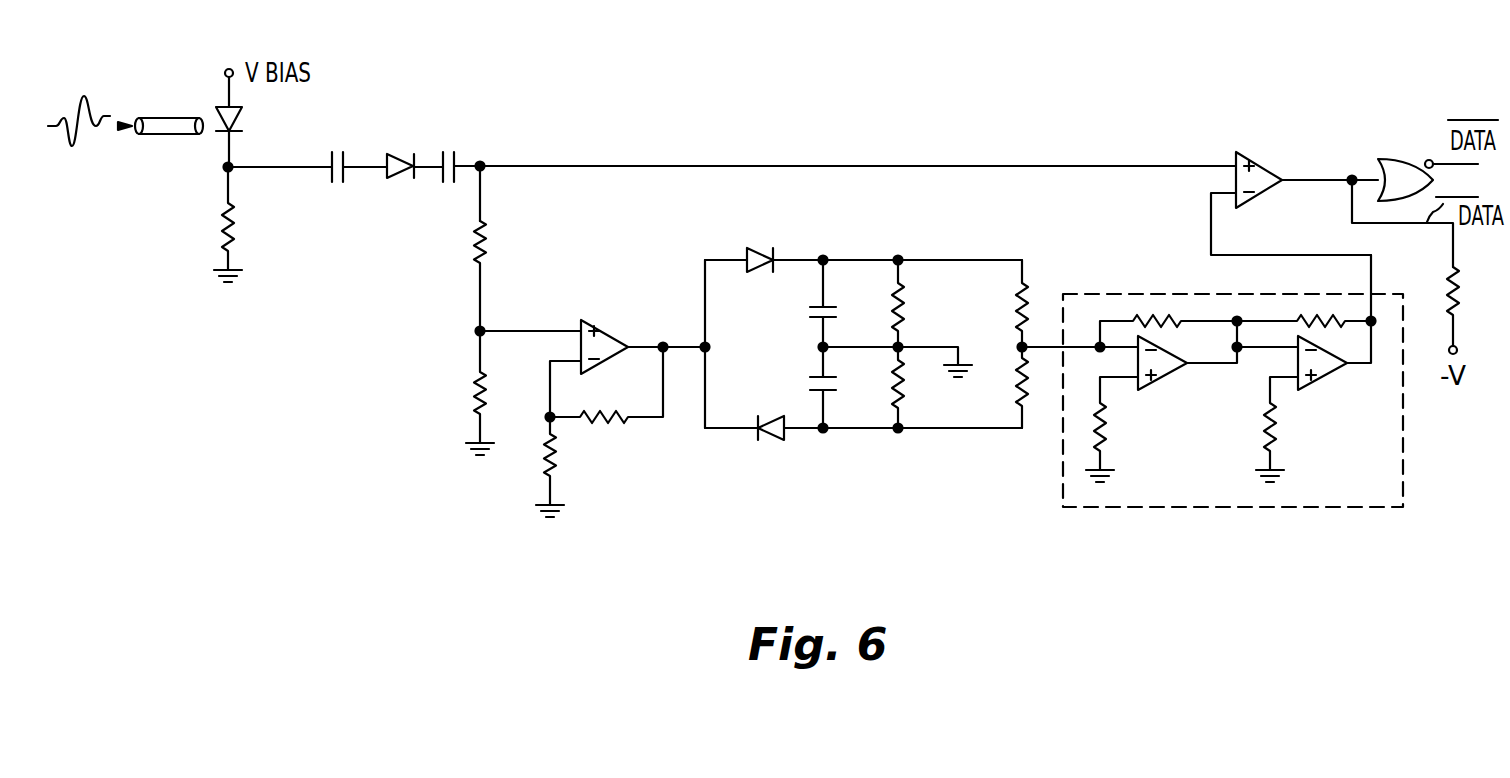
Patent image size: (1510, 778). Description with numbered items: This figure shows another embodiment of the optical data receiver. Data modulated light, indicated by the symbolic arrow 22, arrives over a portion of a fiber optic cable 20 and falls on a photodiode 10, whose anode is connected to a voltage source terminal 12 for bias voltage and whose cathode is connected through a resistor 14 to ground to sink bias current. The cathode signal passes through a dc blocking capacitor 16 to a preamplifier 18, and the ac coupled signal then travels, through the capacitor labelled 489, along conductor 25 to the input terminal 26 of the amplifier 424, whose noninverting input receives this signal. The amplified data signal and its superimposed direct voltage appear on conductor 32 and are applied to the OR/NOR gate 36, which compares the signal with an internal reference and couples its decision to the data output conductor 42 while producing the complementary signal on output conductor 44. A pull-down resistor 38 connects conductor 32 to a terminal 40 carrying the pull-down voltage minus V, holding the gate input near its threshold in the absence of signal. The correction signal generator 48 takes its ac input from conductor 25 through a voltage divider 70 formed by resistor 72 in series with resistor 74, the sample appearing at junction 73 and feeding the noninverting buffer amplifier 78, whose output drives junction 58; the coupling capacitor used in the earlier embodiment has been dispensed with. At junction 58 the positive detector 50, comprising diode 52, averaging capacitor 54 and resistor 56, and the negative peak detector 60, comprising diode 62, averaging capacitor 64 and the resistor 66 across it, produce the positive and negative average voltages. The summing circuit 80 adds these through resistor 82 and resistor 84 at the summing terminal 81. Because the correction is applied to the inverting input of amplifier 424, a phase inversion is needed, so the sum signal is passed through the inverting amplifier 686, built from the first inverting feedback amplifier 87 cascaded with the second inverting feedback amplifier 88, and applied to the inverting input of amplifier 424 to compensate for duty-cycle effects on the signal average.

The data modulated light 22 is at (90, 94).
The fiber optic cable 20 is at (172, 137).
The voltage source terminal 12 is at (225, 73).
The photodiode 10 is at (242, 112).
The resistor 14 is at (222, 222).
The dc blocking capacitor 16 is at (338, 150).
The preamplifier 18 is at (400, 152).
The capacitor 489 is at (447, 152).
The conductor 25 is at (782, 166).
The voltage divider 70 is at (481, 310).
The resistor 72 is at (474, 242).
The junction 73 is at (476, 331).
The resistor 74 is at (478, 392).
The noninverting buffer amplifier 78 is at (644, 398).
The junction 58 is at (700, 347).
The correction signal generator 48 is at (901, 370).
The positive detector 50 is at (862, 276).
The diode 52 is at (749, 248).
The averaging capacitor 54 is at (808, 313).
The resistor 56 is at (892, 312).
The negative peak detector 60 is at (863, 413).
The diode 62 is at (772, 440).
The averaging capacitor 64 is at (811, 383).
The resistor 66 is at (892, 385).
The summing circuit 80 is at (974, 344).
The resistor 82 is at (1016, 312).
The resistor 84 is at (1019, 394).
The summing terminal 81 is at (1026, 343).
The inverting amplifier 686 is at (1233, 404).
The first inverting feedback amplifier 87 is at (1166, 385).
The second inverting feedback amplifier 88 is at (1330, 385).
The input terminal 26 is at (1235, 158).
The amplifier 424 is at (1281, 154).
The conductor 32 is at (1312, 182).
The OR/NOR gate 36 is at (1400, 158).
The output conductor 44 is at (1462, 166).
The data output conductor 42 is at (1402, 223).
The pull-down resistor 38 is at (1460, 300).
The terminal 40 is at (1458, 350).